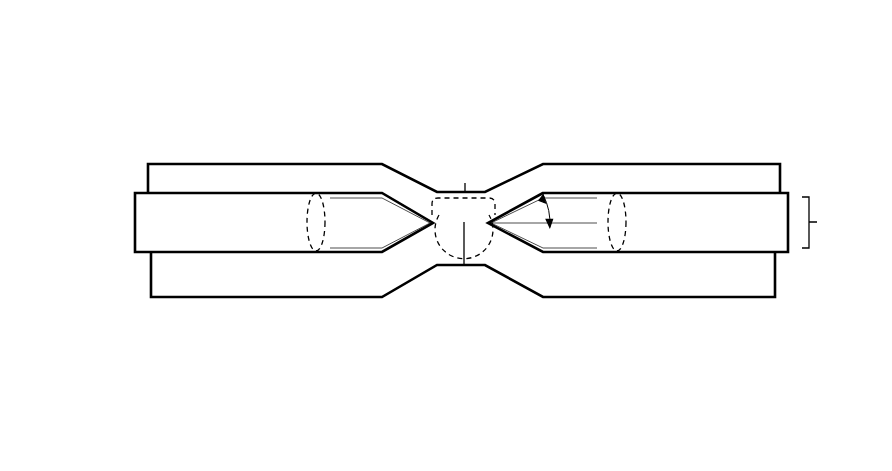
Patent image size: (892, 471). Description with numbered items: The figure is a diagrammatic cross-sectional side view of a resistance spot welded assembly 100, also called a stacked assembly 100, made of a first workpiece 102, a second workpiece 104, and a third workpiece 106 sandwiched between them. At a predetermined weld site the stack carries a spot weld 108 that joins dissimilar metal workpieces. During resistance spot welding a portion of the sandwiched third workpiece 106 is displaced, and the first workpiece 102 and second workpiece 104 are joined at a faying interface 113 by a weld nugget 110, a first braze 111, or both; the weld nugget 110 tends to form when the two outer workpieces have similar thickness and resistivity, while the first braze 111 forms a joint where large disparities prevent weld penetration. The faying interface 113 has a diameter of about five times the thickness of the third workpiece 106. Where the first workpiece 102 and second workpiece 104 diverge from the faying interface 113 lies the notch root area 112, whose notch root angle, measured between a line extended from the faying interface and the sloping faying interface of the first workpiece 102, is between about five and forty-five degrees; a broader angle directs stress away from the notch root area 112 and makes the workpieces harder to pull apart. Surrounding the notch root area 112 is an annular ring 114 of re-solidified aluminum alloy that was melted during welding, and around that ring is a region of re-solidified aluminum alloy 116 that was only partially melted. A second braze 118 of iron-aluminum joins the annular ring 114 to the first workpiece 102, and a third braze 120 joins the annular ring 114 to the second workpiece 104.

The resistance spot welded assembly 100 is at (681, 125).
The first workpiece 102 is at (162, 180).
The second workpiece 104 is at (173, 275).
The third workpiece 106 is at (140, 217).
The spot weld 108 is at (482, 172).
The weld nugget 110 is at (445, 238).
The first braze 111 is at (481, 235).
The notch root area 112 is at (413, 226).
The faying interface 113 is at (464, 265).
The annular ring 114 is at (355, 226).
The region of re-solidified aluminum alloy 116 is at (316, 200).
The second braze 118 is at (350, 200).
The third braze 120 is at (579, 253).